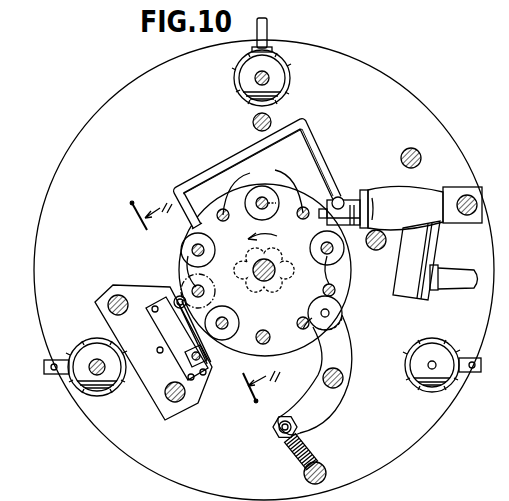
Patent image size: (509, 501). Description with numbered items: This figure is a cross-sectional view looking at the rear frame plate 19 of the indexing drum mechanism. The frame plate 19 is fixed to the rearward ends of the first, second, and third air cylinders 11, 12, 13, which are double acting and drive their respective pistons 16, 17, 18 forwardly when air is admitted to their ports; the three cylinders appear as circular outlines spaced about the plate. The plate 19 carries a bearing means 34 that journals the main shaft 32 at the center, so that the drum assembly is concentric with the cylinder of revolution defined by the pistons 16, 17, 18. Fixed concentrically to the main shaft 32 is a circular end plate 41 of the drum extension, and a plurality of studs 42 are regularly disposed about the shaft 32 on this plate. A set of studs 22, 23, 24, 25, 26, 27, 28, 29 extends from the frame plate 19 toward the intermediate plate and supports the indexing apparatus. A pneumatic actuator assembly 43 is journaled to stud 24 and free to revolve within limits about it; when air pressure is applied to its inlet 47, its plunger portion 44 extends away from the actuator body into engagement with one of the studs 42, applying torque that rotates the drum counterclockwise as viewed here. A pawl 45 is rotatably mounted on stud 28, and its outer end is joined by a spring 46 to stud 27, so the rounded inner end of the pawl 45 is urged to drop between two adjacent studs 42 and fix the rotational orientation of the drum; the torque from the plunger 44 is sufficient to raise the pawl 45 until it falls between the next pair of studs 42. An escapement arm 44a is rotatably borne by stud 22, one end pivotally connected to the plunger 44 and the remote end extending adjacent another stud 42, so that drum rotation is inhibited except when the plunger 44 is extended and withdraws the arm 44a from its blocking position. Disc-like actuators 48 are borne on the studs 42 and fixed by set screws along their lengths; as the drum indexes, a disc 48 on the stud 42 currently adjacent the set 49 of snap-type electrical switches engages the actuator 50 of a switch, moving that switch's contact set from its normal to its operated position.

The first air cylinder 11 is at (288, 77).
The second air cylinder 12 is at (447, 343).
The third air cylinder 13 is at (122, 382).
The piston 16 is at (254, 78).
The piston 17 is at (429, 367).
The piston 18 is at (94, 360).
The frame plate 19 is at (93, 127).
The stud 22 is at (253, 122).
The stud 23 is at (410, 148).
The stud 24 is at (468, 215).
The stud 25 is at (377, 251).
The stud 26 is at (183, 399).
The stud 27 is at (344, 380).
The stud 28 is at (322, 466).
The stud 29 is at (115, 295).
The main shaft 32 is at (268, 282).
The bearing means 34 is at (280, 277).
The circular end plate 41 is at (222, 239).
The studs 42 is at (262, 200).
The pneumatic actuator assembly 43 is at (383, 190).
The plunger portion 44 is at (327, 198).
The escapement arm 44a is at (205, 163).
The pawl 45 is at (313, 390).
The spring 46 is at (292, 455).
The inlet 47 is at (451, 289).
The disc-like actuators 48 is at (280, 208).
The set of snap type electrical switches 49 is at (154, 401).
The switch actuator 50 is at (178, 296).